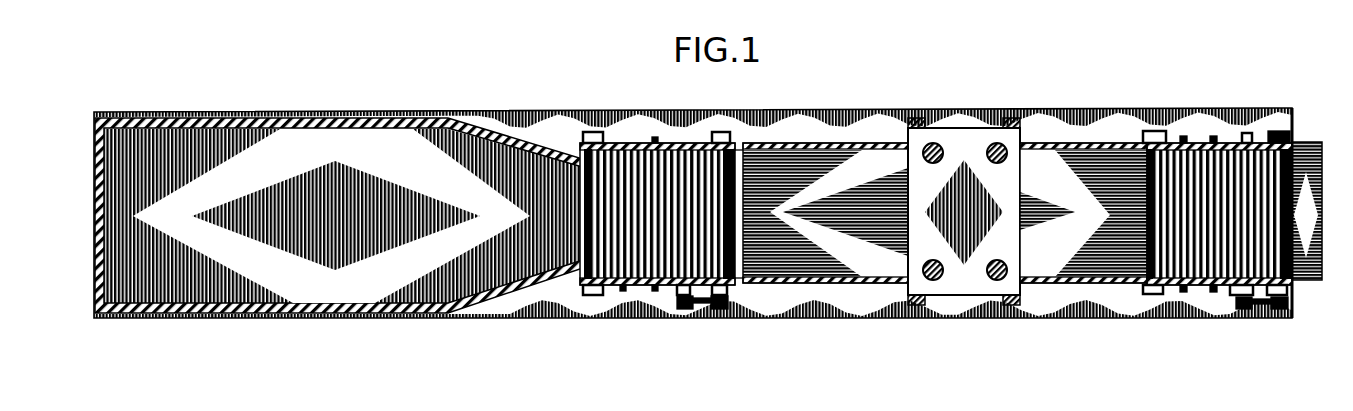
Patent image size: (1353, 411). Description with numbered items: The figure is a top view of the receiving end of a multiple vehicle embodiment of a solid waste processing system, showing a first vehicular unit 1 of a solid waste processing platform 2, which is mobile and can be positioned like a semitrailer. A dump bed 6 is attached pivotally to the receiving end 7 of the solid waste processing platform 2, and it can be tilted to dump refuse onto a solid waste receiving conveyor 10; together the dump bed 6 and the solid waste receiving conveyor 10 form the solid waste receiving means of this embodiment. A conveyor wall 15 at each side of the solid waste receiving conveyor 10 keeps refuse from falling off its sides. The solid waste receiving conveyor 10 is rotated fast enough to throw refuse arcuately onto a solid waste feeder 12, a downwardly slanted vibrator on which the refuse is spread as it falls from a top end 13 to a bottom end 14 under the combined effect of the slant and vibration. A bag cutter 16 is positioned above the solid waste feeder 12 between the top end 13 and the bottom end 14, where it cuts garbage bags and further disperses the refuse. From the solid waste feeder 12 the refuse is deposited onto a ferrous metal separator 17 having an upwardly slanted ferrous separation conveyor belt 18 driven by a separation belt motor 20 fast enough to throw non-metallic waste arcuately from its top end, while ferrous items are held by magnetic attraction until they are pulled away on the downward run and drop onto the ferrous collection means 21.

The first vehicular unit 1 is at (1227, 60).
The solid waste processing platform 2 is at (812, 110).
The dump bed 6 is at (258, 272).
The receiving end 7 is at (97, 320).
The solid waste receiving conveyor 10 is at (657, 216).
The solid waste feeder 12 is at (832, 233).
The top end 13 is at (753, 277).
The bottom end 14 is at (1147, 217).
The conveyor wall 15 is at (665, 155).
The bag cutter 16 is at (961, 325).
The ferrous metal separator 17 is at (1216, 335).
The ferrous separation conveyor belt 18 is at (1207, 213).
The separation belt motor 20 is at (1250, 290).
The ferrous collection means 21 is at (1307, 260).